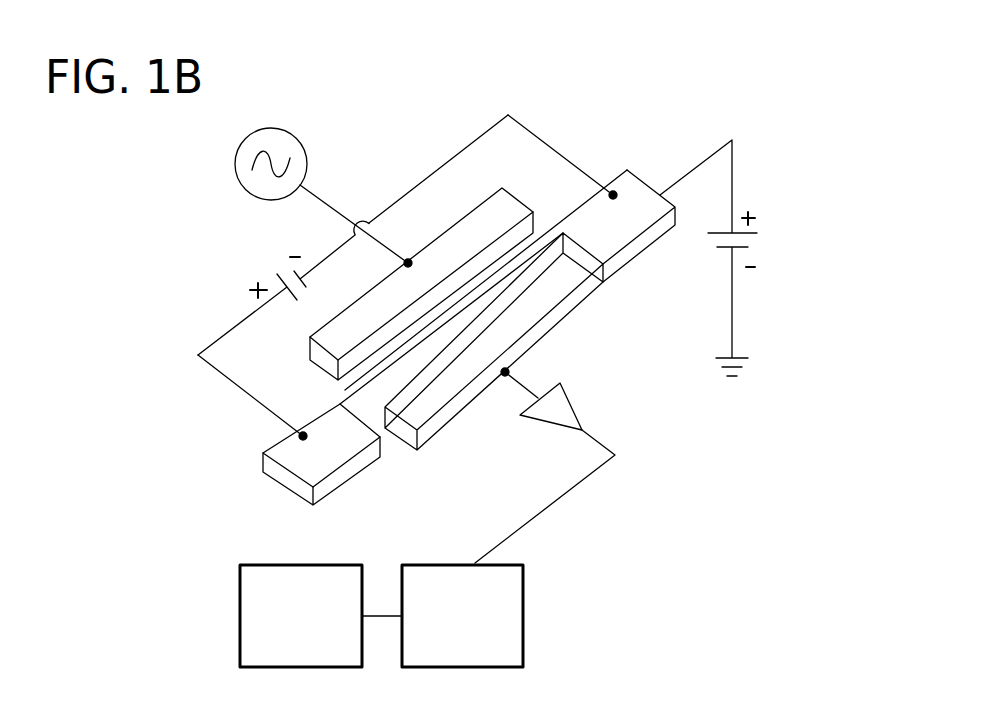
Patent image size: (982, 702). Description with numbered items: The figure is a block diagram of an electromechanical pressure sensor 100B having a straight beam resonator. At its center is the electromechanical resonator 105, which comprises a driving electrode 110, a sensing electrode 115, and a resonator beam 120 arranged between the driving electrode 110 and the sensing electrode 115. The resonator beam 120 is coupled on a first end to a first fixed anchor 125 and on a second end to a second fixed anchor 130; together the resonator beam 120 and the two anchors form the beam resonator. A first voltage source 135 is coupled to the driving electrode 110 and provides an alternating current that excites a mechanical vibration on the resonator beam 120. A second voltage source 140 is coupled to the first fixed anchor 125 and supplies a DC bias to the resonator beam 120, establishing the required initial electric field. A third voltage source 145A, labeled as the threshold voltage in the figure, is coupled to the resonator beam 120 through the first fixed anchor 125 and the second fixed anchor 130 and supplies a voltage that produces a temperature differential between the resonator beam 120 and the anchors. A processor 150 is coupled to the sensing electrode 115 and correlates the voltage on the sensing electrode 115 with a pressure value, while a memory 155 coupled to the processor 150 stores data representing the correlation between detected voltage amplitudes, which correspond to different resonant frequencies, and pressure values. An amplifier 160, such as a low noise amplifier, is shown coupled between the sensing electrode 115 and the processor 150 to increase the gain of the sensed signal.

The electromechanical pressure sensor 100B is at (602, 70).
The electromechanical resonator 105 is at (301, 527).
The driving electrode 110 is at (480, 224).
The sensing electrode 115 is at (543, 317).
The resonator beam 120 is at (345, 392).
The first fixed anchor 125 is at (633, 189).
The second fixed anchor 130 is at (317, 465).
The first voltage source 135 is at (298, 136).
The second voltage source 140 is at (755, 230).
The third voltage source 145A is at (272, 275).
The processor 150 is at (487, 630).
The memory 155 is at (324, 630).
The amplifier 160 is at (570, 397).